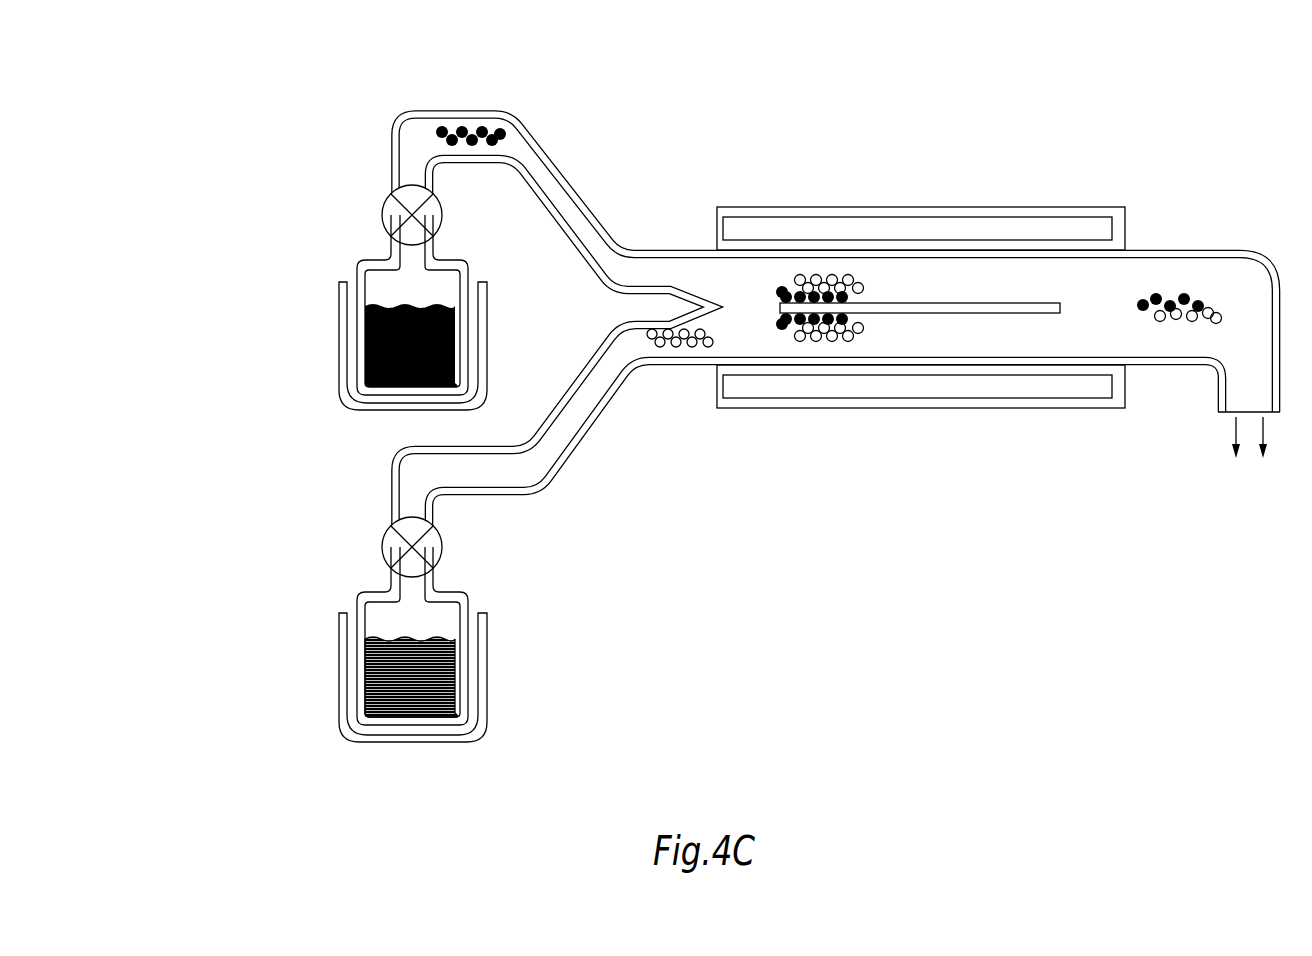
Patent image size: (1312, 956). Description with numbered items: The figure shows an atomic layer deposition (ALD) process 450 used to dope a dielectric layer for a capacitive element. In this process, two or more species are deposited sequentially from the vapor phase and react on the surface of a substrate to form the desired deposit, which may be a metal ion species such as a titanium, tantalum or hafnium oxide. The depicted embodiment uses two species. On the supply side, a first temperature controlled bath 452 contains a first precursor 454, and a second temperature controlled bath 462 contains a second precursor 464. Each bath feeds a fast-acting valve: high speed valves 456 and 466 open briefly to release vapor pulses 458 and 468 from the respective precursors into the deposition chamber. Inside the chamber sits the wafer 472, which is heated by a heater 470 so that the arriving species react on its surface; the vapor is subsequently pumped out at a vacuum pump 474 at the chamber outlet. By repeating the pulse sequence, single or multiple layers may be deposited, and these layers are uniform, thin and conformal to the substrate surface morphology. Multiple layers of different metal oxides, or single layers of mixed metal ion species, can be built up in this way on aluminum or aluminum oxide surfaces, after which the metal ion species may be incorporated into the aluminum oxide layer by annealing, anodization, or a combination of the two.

The atomic layer deposition (ALD) process 450 is at (1202, 65).
The first temperature controlled bath 452 is at (339, 333).
The first precursor 454 is at (392, 305).
The high speed valve 456 is at (382, 215).
The vapor pulse 458 is at (434, 133).
The second temperature controlled bath 462 is at (339, 664).
The second precursor 464 is at (395, 644).
The high speed valve 466 is at (382, 547).
The vapor pulse 468 is at (680, 350).
The heater 470 is at (765, 206).
The wafer 472 is at (935, 288).
The vacuum pump 474 is at (1206, 490).